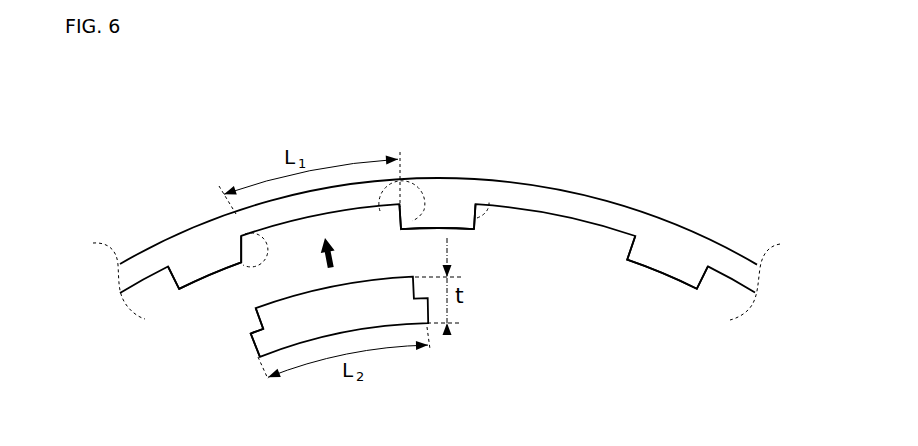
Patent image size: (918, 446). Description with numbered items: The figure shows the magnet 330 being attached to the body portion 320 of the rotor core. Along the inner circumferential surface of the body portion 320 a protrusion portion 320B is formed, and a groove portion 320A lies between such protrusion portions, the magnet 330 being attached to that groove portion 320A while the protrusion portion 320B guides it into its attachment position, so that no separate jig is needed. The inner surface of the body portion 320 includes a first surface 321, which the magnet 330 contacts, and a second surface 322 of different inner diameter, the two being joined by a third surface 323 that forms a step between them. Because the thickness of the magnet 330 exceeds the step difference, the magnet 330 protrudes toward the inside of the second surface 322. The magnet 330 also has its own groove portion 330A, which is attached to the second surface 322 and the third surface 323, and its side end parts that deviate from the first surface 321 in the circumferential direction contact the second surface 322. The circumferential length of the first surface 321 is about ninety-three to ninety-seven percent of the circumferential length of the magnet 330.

The body portion 320 is at (572, 191).
The groove portion 320A is at (240, 262).
The protrusion portion 320B is at (680, 267).
The first surface 321 is at (406, 212).
The second surface 322 is at (468, 230).
The third surface 323 is at (483, 209).
The magnet 330 is at (256, 348).
The groove portion 330A is at (253, 322).